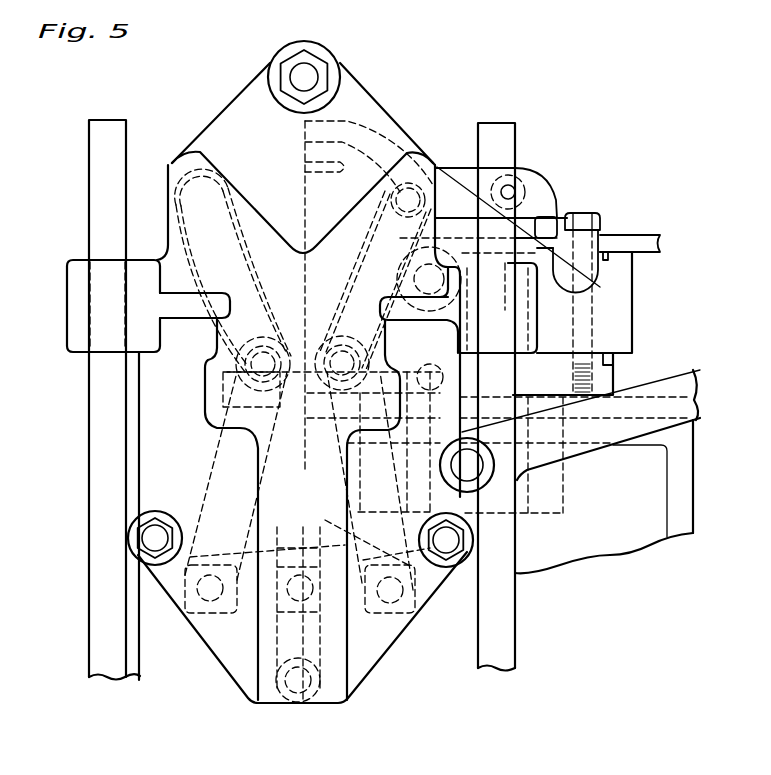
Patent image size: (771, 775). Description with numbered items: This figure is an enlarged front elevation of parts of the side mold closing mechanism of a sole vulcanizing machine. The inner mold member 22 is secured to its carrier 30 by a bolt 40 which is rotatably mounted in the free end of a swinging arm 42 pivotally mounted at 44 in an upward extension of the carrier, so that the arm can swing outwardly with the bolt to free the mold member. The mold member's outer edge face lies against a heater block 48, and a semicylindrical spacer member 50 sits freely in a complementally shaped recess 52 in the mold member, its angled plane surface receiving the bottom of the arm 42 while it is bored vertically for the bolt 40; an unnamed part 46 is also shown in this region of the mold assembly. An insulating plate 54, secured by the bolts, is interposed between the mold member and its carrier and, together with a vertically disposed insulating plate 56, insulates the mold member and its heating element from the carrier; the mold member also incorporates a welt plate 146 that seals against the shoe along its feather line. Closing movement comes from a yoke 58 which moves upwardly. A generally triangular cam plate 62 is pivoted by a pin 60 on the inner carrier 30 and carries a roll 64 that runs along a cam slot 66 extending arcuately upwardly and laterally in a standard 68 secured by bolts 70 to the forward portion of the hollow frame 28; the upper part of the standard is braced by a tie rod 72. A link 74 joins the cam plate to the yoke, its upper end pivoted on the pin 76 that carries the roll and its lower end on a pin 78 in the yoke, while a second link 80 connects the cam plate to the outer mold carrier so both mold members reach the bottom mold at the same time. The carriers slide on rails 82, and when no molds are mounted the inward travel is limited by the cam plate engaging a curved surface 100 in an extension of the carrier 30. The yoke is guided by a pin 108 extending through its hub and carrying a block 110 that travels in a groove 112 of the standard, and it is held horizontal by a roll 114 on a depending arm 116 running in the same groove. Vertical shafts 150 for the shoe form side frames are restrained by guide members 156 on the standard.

The inner mold member 22 is at (627, 310).
The hollow frame 28 is at (622, 543).
The carrier 30 is at (610, 375).
The bolt 40 is at (580, 214).
The swinging arm 42 is at (550, 216).
The pivot 44 is at (512, 190).
The spacer 46 is at (522, 268).
The heater block 48 is at (510, 312).
The semicylindrical spacer member 50 is at (580, 280).
The recess 52 is at (635, 255).
The insulating plate 54 is at (608, 357).
The vertically disposed insulating plate 56 is at (468, 326).
The yoke 58 is at (390, 647).
The pin 60 is at (442, 252).
The cam plate 62 is at (470, 497).
The roll 64 is at (333, 304).
The cam slot 66 is at (357, 240).
The standard 68 is at (366, 92).
The bolt 70 is at (152, 537).
The tie rod 72 is at (307, 70).
The link 74 is at (437, 590).
The pin 76 is at (410, 350).
The pin 78 is at (400, 610).
The link 80 is at (577, 447).
The rail 82 is at (667, 403).
The curved surface 100 is at (388, 120).
The pin 108 is at (300, 601).
The block 110 is at (300, 565).
The groove 112 is at (253, 673).
The roll 114 is at (283, 703).
The depending arm 116 is at (368, 685).
The welt plate 146 is at (647, 233).
The vertical shaft 150 is at (88, 455).
The guide member 156 is at (72, 310).